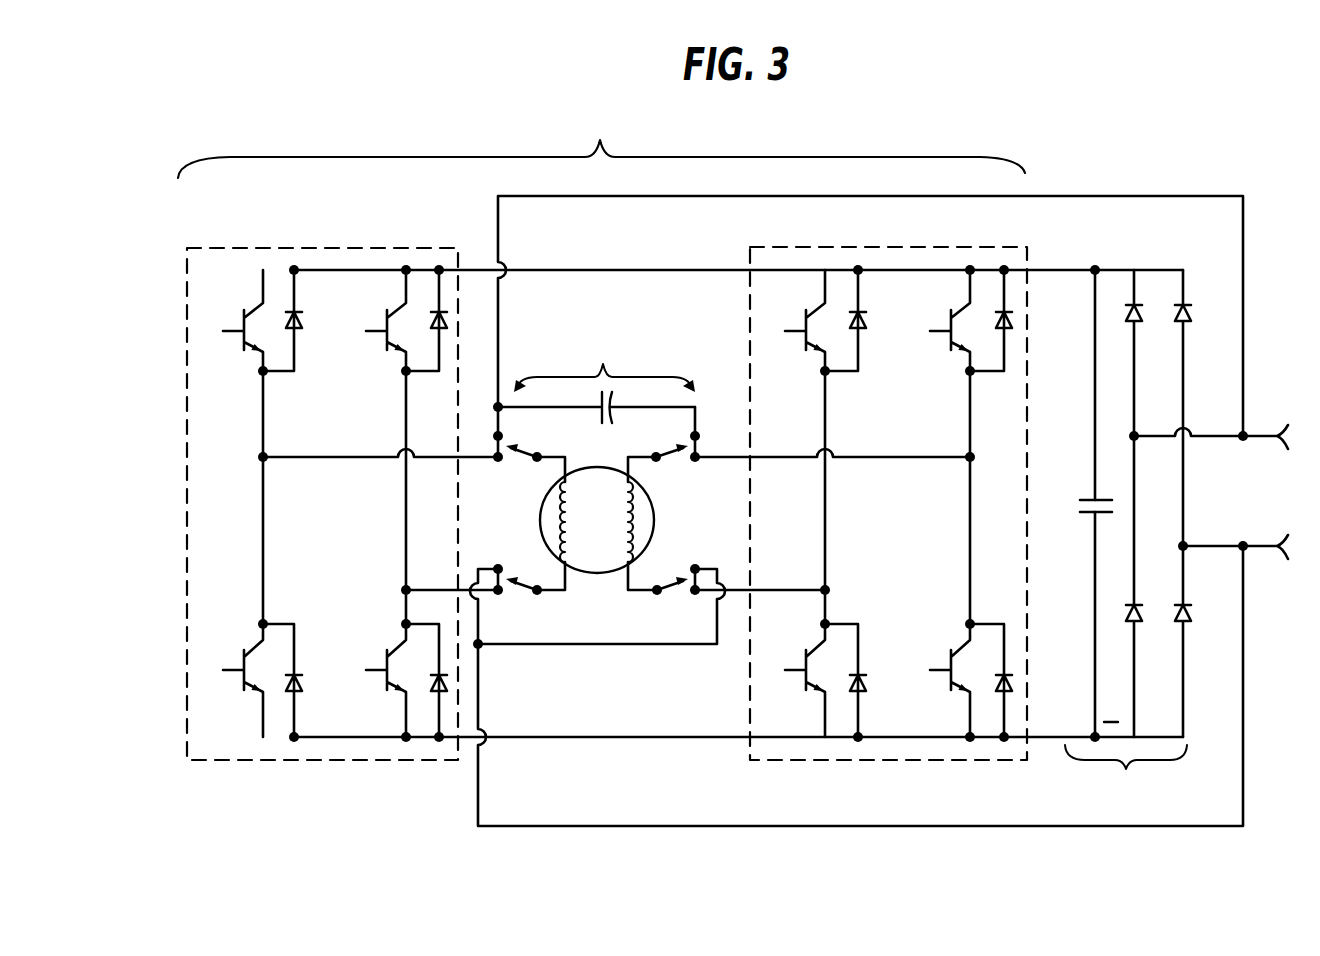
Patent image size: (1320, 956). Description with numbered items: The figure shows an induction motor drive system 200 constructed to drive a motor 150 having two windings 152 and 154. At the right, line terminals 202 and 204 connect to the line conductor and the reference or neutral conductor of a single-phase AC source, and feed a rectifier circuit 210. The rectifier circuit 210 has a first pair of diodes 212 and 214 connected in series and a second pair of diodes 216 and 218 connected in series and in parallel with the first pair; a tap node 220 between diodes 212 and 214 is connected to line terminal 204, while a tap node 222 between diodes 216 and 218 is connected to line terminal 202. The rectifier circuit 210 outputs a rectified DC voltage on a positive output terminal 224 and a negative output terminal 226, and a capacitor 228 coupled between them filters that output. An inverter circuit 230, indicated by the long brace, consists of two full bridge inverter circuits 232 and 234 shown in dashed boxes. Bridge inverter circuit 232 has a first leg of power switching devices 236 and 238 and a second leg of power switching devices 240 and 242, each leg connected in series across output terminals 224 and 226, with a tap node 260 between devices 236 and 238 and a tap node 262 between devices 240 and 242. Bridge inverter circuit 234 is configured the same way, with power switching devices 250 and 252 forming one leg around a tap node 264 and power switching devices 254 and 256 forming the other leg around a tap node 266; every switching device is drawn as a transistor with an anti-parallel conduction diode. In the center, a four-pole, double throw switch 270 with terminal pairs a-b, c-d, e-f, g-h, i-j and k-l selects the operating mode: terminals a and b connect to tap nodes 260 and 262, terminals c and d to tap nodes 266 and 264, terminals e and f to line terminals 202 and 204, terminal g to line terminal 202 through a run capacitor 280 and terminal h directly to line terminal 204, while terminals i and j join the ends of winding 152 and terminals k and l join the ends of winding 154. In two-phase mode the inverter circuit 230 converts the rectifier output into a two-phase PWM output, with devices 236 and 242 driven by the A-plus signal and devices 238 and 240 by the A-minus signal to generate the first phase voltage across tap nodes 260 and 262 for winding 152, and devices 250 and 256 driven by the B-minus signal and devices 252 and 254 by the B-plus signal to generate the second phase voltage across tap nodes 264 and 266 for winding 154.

The motor 150 is at (597, 543).
The winding 152 is at (572, 525).
The winding 154 is at (621, 525).
The system 200 is at (768, 539).
The line terminal 202 is at (1280, 430).
The line terminal 204 is at (1276, 552).
The rectifier circuit 210 is at (1147, 511).
The diode 212 is at (1193, 320).
The diode 214 is at (1192, 620).
The diode 216 is at (1125, 320).
The diode 218 is at (1143, 620).
The tap node 220 is at (1186, 542).
The tap node 222 is at (1137, 440).
The positive output terminal 224 is at (1094, 266).
The negative output terminal 226 is at (1093, 735).
The capacitor 228 is at (1082, 496).
The inverter circuit 230 is at (601, 143).
The full bridge inverter circuit 232 is at (364, 240).
The full bridge inverter circuit 234 is at (930, 240).
The power switching device 236 is at (260, 308).
The power switching device 238 is at (260, 645).
The power switching device 240 is at (403, 308).
The power switching device 242 is at (403, 645).
The power switching device 250 is at (822, 308).
The power switching device 252 is at (822, 645).
The power switching device 254 is at (967, 308).
The power switching device 256 is at (967, 645).
The tap node 260 is at (262, 452).
The tap node 262 is at (404, 585).
The tap node 264 is at (823, 585).
The tap node 266 is at (968, 452).
The four-pole, double throw switch 270 is at (608, 479).
The run capacitor 280 is at (600, 414).